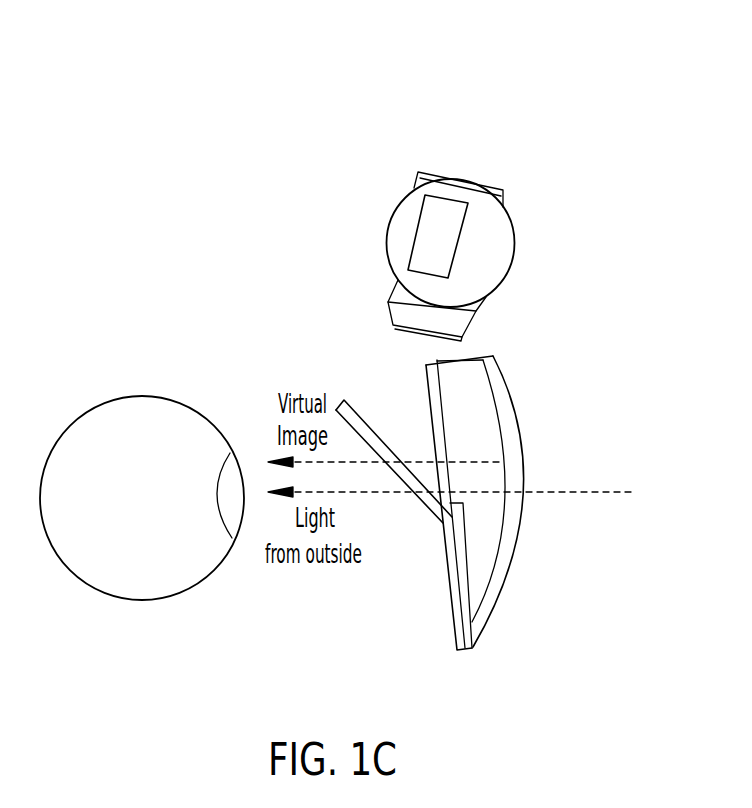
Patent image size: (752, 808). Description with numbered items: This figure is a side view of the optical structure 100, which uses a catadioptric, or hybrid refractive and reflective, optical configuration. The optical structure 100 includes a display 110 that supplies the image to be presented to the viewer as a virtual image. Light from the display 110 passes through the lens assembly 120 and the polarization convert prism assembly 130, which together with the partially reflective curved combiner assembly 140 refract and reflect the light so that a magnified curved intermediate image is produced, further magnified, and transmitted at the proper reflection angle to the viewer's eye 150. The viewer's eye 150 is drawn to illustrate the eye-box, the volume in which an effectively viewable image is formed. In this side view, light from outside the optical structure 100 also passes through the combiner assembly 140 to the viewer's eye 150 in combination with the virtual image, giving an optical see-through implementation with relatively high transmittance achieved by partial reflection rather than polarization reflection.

The optical structure 100 is at (457, 101).
The display 110 is at (430, 244).
The lens assembly 120 is at (515, 234).
The polarization convert prism assembly 130 is at (390, 312).
The partially reflective curved combiner assembly 140 is at (428, 558).
The viewer's eye 150 is at (88, 588).